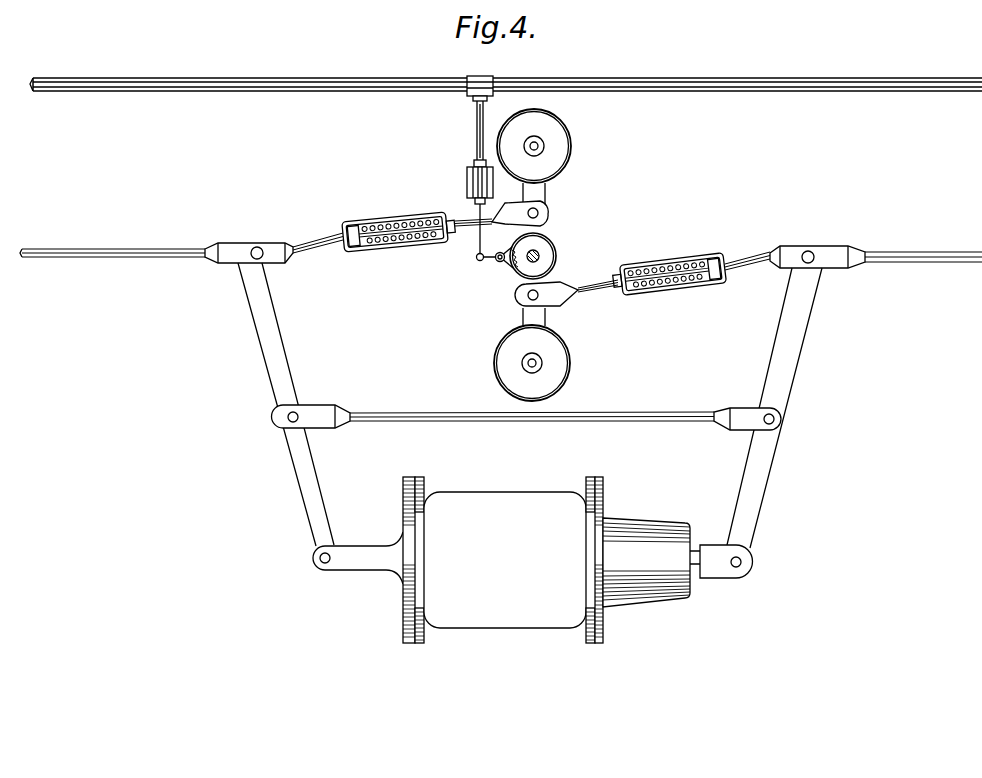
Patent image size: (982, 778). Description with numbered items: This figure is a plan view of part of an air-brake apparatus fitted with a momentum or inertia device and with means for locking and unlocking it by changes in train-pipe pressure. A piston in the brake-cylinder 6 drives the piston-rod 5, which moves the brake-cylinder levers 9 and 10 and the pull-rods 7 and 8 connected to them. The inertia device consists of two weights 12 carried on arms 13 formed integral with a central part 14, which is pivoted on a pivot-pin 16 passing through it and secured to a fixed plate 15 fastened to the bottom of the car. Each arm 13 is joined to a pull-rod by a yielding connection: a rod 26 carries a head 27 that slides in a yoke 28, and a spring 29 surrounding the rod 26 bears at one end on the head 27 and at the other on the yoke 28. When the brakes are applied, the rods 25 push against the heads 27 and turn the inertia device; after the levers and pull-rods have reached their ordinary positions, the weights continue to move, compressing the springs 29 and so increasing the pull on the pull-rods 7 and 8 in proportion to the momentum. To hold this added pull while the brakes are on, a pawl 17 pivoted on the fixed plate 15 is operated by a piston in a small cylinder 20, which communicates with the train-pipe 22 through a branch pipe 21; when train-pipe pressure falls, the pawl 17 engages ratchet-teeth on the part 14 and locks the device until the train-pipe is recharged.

The piston-rod 5 is at (702, 568).
The brake-cylinder 6 is at (546, 560).
The pull-rod 7 is at (912, 254).
The pull-rod 8 is at (127, 250).
The brake-cylinder lever 9 is at (795, 369).
The brake-cylinder lever 10 is at (268, 342).
The weight 12 is at (557, 145).
The arm 13 is at (546, 193).
The central part 14 is at (558, 250).
The fixed plate 15 is at (592, 268).
The pivot-pin 16 is at (538, 252).
The pawl 17 is at (504, 264).
The small cylinder 20 is at (467, 181).
The branch pipe 21 is at (477, 129).
The train-pipe 22 is at (640, 79).
The rod 25 is at (314, 246).
The rod 26 is at (466, 236).
The head 27 is at (358, 232).
The yoke 28 is at (413, 226).
The spring 29 is at (374, 248).